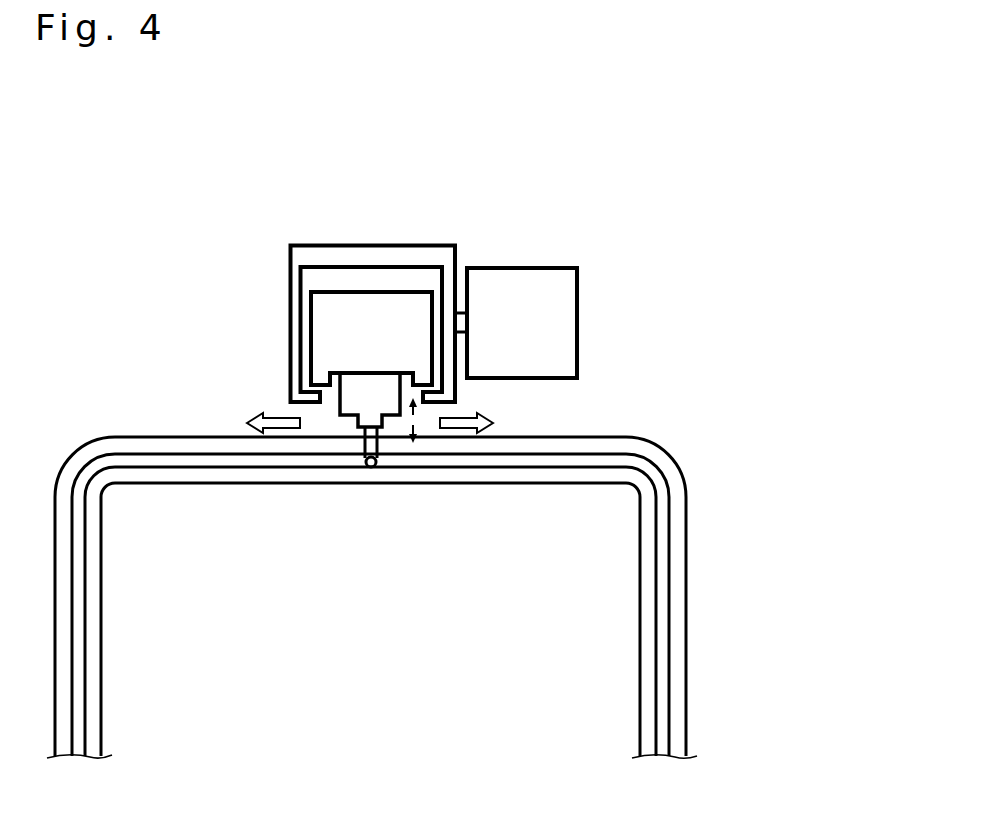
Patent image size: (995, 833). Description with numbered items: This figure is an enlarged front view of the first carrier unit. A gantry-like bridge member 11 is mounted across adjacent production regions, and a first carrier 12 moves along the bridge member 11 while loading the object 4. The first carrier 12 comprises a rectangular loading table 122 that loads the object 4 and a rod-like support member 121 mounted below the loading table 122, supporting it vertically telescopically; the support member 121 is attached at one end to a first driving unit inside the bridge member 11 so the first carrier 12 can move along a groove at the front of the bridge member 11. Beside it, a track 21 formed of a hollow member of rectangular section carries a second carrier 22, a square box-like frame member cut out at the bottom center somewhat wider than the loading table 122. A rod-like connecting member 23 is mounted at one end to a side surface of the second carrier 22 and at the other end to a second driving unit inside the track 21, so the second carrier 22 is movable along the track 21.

The object 4 is at (395, 297).
The bridge member 11 is at (680, 517).
The first carrier 12 is at (166, 353).
The track 21 is at (572, 303).
The second carrier 22 is at (388, 244).
The connecting member 23 is at (460, 313).
The support member 121 is at (363, 431).
The loading table 122 is at (348, 383).